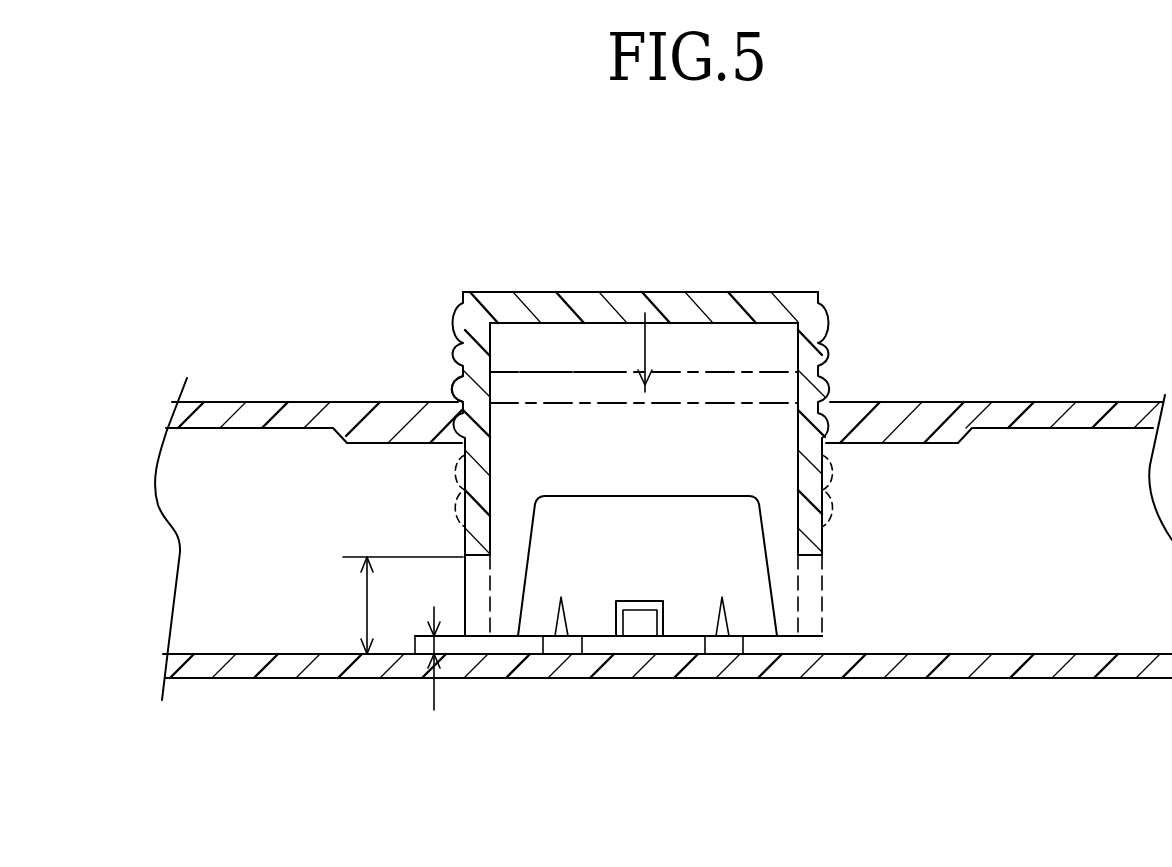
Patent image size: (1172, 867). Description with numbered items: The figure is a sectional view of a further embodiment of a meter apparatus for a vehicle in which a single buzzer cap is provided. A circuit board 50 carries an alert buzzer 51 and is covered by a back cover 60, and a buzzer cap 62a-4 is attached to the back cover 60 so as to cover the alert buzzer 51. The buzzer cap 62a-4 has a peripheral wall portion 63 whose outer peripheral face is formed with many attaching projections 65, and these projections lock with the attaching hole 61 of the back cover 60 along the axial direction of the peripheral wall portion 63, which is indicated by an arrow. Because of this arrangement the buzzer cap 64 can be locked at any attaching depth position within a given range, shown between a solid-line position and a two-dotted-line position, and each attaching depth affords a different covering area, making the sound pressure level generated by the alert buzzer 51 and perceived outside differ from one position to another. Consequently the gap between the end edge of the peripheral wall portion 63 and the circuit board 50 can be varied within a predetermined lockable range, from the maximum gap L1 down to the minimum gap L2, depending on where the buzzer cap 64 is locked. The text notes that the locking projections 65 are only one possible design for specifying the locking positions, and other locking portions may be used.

The circuit board 50 is at (1017, 663).
The alert buzzer 51 is at (753, 613).
The back cover 60 is at (1034, 402).
The attaching hole 61 is at (826, 400).
The buzzer cap 62a-4 is at (818, 290).
The peripheral wall portion 63 is at (478, 474).
The buzzer cap 64 is at (558, 373).
The attaching projections 65 is at (457, 392).
The maximum gap L1 is at (361, 600).
The minimum gap L2 is at (434, 648).